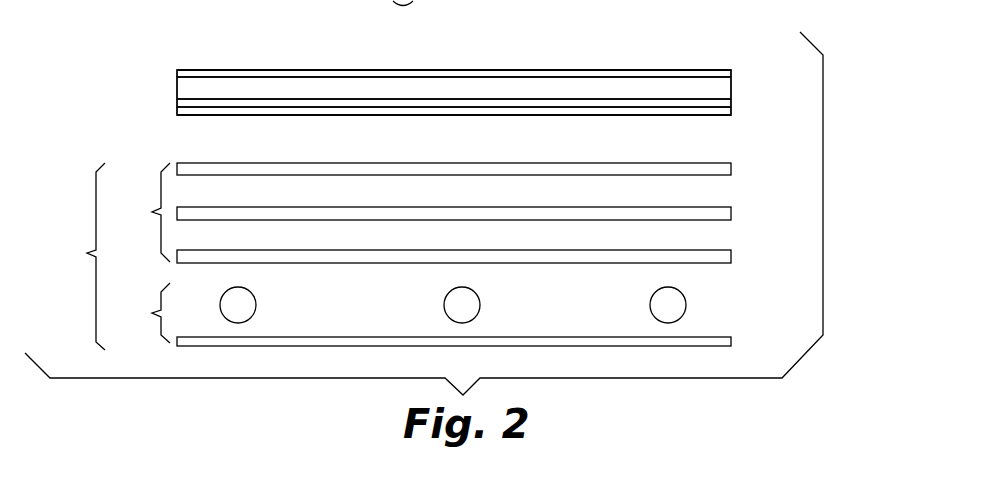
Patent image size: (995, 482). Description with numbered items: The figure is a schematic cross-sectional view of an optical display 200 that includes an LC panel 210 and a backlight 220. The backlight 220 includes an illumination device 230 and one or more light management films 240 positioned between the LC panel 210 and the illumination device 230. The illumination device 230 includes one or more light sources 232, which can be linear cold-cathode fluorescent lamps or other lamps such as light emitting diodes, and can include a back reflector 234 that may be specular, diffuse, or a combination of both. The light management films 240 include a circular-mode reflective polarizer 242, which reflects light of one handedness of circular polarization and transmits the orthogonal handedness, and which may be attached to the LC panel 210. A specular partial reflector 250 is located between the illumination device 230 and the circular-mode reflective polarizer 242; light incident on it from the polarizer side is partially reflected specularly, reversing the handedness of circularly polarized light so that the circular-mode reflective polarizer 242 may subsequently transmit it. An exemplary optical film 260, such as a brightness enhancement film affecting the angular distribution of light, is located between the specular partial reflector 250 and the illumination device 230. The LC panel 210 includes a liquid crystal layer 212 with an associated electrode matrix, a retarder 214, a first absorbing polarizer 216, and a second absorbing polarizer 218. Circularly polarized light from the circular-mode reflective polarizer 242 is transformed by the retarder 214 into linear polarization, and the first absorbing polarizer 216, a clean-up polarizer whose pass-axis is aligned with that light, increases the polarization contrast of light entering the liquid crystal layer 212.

The optical display 200 is at (267, 45).
The LC panel 210 is at (173, 83).
The liquid crystal layer 212 is at (607, 87).
The retarder 214 is at (731, 112).
The first absorbing polarizer 216 is at (731, 103).
The second absorbing polarizer 218 is at (688, 72).
The backlight 220 is at (75, 256).
The illumination device 230 is at (140, 313).
The light sources 232 is at (250, 303).
The back reflector 234 is at (731, 342).
The light management films 240 is at (140, 212).
The circular-mode reflective polarizer 242 is at (731, 170).
The specular partial reflector 250 is at (731, 214).
The optical film 260 is at (731, 257).